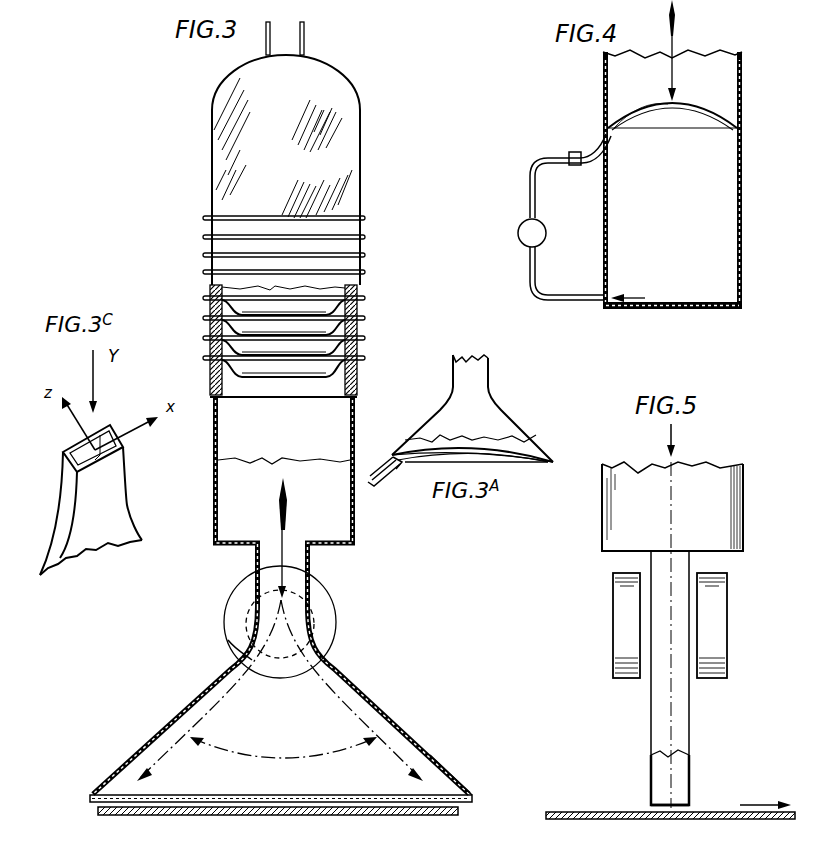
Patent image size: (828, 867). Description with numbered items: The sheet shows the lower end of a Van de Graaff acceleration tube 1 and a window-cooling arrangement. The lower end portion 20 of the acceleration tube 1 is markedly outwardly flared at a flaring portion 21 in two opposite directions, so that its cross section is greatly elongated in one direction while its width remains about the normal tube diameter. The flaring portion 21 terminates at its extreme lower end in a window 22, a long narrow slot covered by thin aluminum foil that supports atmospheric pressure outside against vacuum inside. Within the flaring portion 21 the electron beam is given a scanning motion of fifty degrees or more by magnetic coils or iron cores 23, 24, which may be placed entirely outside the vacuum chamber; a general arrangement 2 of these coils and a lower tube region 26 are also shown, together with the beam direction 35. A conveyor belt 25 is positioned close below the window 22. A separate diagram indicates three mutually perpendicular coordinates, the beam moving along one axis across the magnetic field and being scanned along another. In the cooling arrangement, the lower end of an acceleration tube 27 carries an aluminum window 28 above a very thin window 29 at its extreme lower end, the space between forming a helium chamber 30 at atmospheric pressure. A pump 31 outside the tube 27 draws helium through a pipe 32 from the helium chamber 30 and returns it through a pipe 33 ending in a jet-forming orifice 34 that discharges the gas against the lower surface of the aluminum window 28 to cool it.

In FIG. 3, the acceleration tube 1 is at (376, 321).
In FIG. 5, the acceleration tube 1 is at (760, 466).
In FIG. 5, the coil assembly 2 is at (596, 582).
In FIG. 5, the lower end portion of acceleration tube 20 is at (659, 805).
In FIG. 3, the flaring portion 21 is at (410, 721).
In FIG. 5, the flaring portion 21 is at (688, 735).
In FIG. 3, the window 22 is at (383, 796).
In FIG. 5, the magnetic coil 23 is at (716, 626).
In FIG. 3, the magnetic coil 24 is at (232, 634).
In FIG. 5, the magnetic coil 24 is at (624, 619).
In FIG. 3, the conveyor belt 25 is at (430, 818).
In FIG. 5, the conveyor belt 25 is at (750, 819).
In FIG. 3, the lower end portion 26 is at (450, 780).
In FIG. 5, the lower end portion 26 is at (652, 773).
In FIG. 4, the acceleration tube 27 is at (752, 100).
In FIG. 4, the aluminum window 28 is at (737, 128).
In FIG. 4, the thin window 29 is at (712, 308).
In FIG. 4, the helium chamber 30 is at (728, 260).
In FIG. 4, the pump 31 is at (520, 238).
In FIG. 4, the pipe 32 is at (576, 303).
In FIG. 4, the pipe 33 is at (557, 156).
In FIG. 4, the jet-forming orifice 34 is at (630, 127).
In FIG. 4, the beam / feed arrow 35 is at (674, 46).